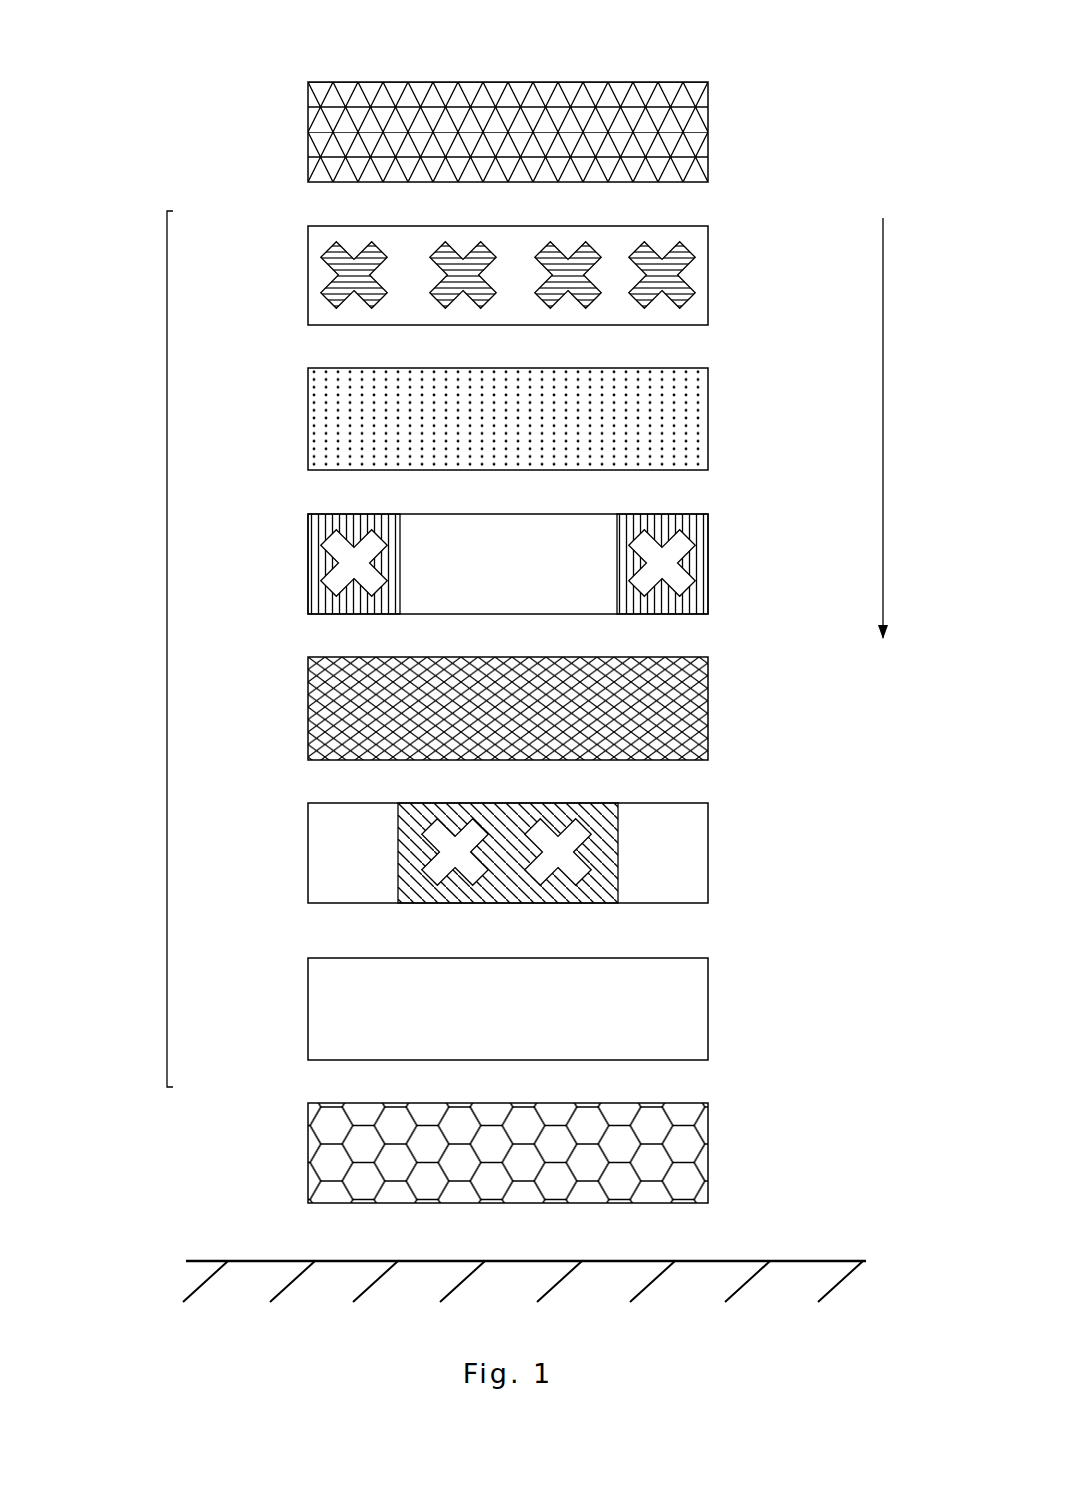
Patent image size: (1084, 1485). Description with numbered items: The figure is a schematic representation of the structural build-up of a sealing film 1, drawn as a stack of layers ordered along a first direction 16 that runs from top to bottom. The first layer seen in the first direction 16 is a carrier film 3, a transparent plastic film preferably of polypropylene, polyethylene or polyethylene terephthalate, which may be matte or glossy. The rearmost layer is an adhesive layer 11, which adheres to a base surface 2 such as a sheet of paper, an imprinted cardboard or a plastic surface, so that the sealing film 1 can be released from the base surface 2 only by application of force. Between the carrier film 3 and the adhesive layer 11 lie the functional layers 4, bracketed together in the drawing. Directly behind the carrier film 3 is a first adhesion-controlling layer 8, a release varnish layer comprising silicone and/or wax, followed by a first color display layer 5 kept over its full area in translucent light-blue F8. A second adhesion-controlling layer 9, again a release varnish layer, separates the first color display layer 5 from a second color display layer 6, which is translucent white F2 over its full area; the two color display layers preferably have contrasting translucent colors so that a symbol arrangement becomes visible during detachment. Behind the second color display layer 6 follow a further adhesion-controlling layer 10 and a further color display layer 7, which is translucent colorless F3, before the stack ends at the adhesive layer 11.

The sealing film 1 is at (226, 111).
The base surface 2 is at (509, 1298).
The carrier film 3 is at (700, 125).
The functional layers 4 is at (167, 648).
The first color display layer 5 is at (672, 436).
The second color display layer 6 is at (680, 710).
The further color display layer 7 is at (685, 1015).
The first adhesion-controlling layer 8 is at (700, 266).
The second adhesion-controlling layer 9 is at (695, 564).
The further adhesion-controlling layer 10 is at (610, 852).
The adhesive layer 11 is at (685, 1160).
The first direction 16 is at (885, 413).
The translucent light-blue F8 is at (328, 415).
The translucent white F2 is at (332, 709).
The translucent colorless F3 is at (342, 1004).